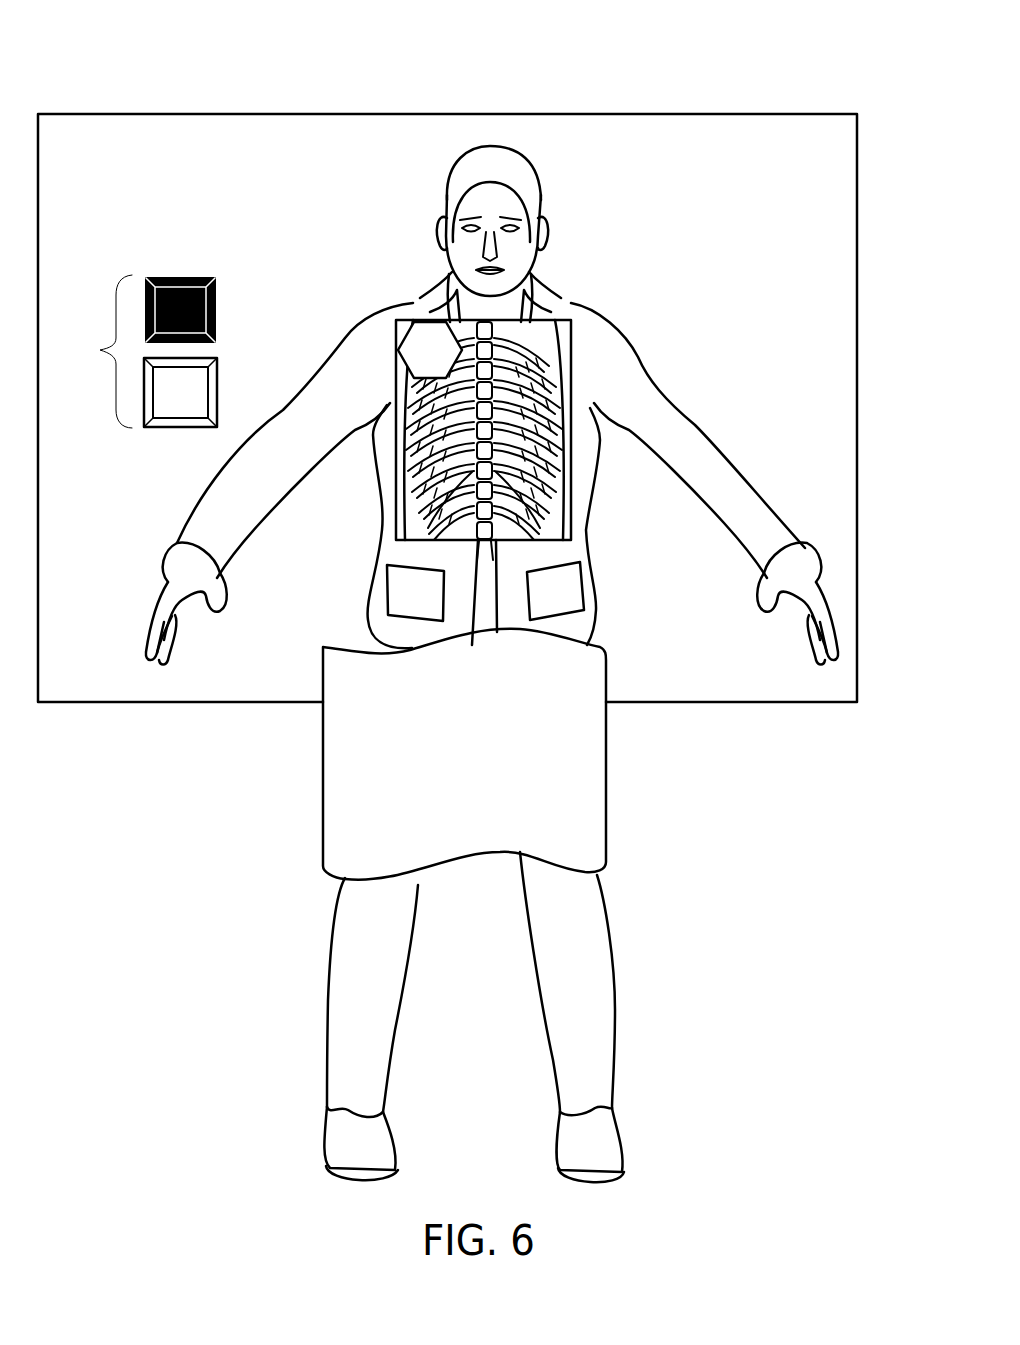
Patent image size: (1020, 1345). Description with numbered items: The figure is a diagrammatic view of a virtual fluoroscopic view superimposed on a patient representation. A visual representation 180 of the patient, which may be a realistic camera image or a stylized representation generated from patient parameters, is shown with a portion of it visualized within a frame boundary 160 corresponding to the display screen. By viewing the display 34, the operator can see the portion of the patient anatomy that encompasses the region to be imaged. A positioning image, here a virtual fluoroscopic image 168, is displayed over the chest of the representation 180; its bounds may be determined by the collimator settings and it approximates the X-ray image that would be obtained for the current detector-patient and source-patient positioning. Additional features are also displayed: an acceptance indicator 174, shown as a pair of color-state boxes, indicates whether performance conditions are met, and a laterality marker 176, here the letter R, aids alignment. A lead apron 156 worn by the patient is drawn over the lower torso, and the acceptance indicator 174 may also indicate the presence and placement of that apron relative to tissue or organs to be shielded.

The display 34 is at (732, 56).
The frame boundary 160 is at (485, 113).
The acceptance indicator 174 is at (100, 350).
The laterality markers 176 is at (412, 329).
The virtual fluoroscopic image 168 is at (549, 358).
The lead apron 156 is at (592, 780).
The visual representation 180 is at (645, 977).